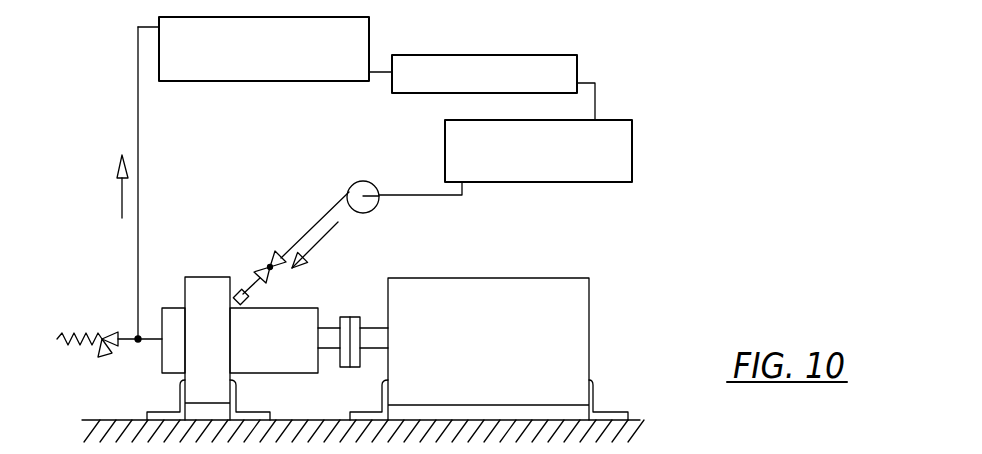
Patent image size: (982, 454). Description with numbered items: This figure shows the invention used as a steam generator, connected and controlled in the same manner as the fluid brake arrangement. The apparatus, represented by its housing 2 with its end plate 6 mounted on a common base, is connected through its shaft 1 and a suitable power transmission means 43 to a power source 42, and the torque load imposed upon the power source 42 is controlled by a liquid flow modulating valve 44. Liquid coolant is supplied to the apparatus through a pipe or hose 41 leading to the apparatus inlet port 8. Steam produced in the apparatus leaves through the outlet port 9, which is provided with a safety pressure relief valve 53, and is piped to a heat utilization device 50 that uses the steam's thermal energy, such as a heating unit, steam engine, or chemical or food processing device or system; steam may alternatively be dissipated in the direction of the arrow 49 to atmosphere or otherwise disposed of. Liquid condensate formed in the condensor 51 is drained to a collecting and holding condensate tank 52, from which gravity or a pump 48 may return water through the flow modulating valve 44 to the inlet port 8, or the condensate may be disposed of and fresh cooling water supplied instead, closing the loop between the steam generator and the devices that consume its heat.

The output shaft 1 is at (323, 352).
The housing 2 is at (257, 373).
The end plate 6 is at (203, 277).
The inlet port 8 is at (236, 305).
The outlet port 9 is at (160, 367).
The pipe or hose 41 is at (310, 224).
The power source 42 is at (589, 278).
The power transmission means 43 is at (350, 317).
The liquid flow modulating valve 44 is at (269, 265).
The pump 48 is at (375, 209).
The arrow 49 is at (122, 205).
The heat utilization device 50 is at (203, 81).
The condensor 51 is at (406, 93).
The condensate tank 52 is at (525, 182).
The safety pressure relief valve 53 is at (105, 347).